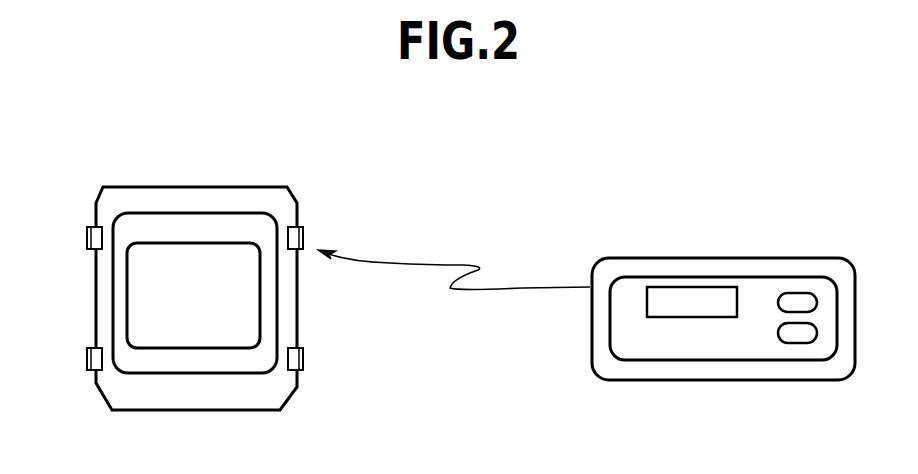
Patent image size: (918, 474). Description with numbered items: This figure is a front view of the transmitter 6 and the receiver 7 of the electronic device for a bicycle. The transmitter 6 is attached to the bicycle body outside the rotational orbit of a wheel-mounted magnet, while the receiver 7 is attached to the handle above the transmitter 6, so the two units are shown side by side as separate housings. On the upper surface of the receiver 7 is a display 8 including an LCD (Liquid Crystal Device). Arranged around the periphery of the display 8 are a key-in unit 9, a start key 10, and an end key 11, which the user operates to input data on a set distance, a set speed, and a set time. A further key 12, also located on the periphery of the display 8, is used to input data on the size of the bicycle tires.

The transmitter 6 is at (679, 254).
The receiver 7 is at (213, 179).
The display 8 is at (200, 340).
The key-in unit 9 is at (87, 236).
The start key 10 is at (88, 358).
The end key 11 is at (303, 233).
The further key 12 is at (303, 358).